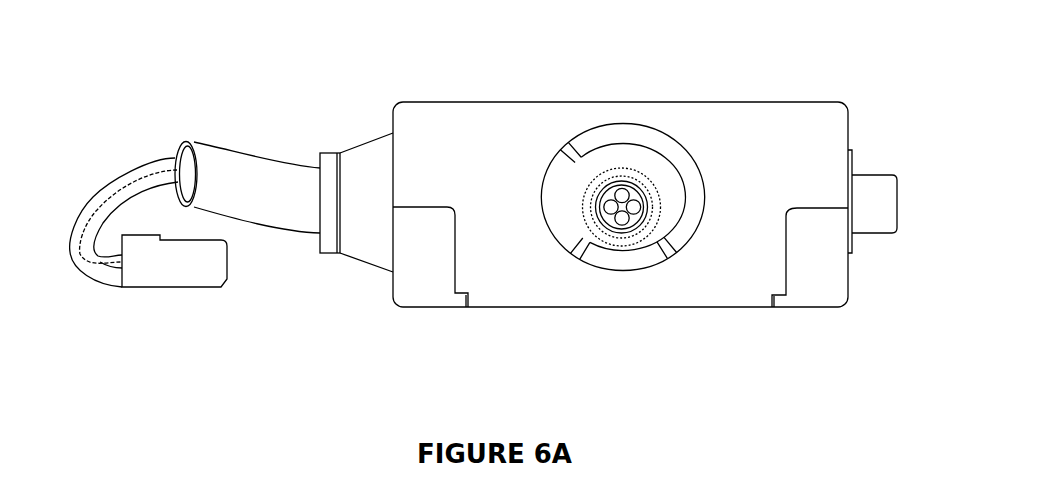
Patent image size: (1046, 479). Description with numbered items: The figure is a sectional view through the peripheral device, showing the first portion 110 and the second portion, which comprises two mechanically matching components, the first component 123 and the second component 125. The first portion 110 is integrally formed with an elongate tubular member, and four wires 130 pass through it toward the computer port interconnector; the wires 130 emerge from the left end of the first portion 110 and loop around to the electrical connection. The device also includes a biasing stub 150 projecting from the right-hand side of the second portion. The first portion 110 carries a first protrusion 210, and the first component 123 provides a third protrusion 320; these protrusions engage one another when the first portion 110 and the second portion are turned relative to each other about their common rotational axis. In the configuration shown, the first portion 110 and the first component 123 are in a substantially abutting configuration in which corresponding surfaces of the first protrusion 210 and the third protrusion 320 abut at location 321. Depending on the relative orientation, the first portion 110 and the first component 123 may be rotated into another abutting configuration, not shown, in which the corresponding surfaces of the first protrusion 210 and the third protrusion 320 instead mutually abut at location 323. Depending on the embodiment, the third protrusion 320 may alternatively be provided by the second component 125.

The first portion 110 is at (573, 162).
The first component 123 is at (482, 123).
The second component 125 is at (430, 283).
The wires 130 is at (120, 170).
The biasing stub 150 is at (865, 183).
The first protrusion 210 is at (558, 170).
The third protrusion 320 is at (622, 272).
The abutment location 321 is at (573, 267).
The abutment location 323 is at (670, 267).